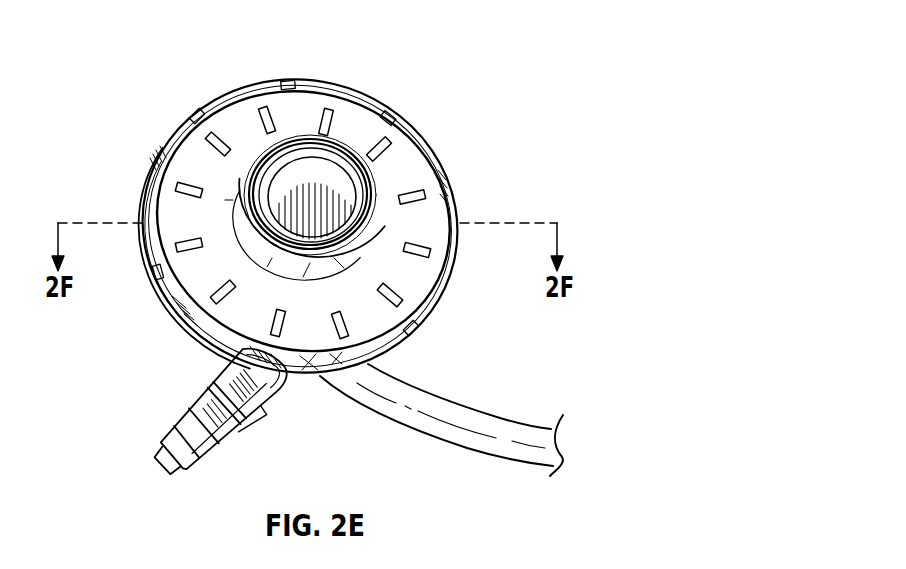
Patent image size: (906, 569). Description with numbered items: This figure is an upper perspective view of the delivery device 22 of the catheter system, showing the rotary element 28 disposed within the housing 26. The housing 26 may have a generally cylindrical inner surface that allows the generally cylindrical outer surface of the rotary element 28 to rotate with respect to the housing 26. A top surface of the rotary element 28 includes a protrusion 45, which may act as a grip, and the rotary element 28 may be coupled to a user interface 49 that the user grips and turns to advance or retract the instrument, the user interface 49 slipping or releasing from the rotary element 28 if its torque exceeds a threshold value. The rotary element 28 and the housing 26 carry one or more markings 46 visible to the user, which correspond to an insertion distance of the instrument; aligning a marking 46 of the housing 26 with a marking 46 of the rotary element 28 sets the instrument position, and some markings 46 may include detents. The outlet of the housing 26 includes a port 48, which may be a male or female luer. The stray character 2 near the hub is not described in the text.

The delivery device 22 is at (189, 63).
The housing 26 is at (363, 97).
The rotary element 28 is at (368, 116).
The protrusion 45 is at (347, 197).
The markings 46 is at (195, 127).
The port 48 is at (173, 446).
The user interface 49 is at (289, 79).
The stray numeral 2 is at (388, 204).